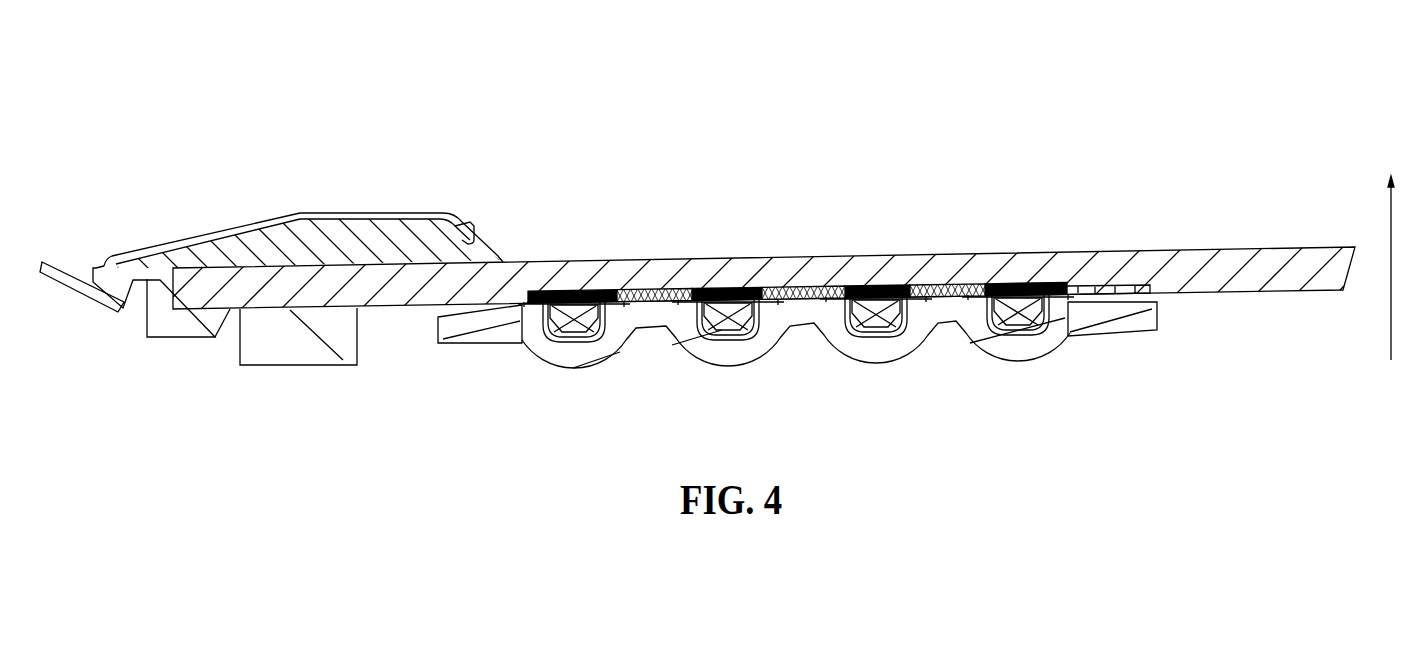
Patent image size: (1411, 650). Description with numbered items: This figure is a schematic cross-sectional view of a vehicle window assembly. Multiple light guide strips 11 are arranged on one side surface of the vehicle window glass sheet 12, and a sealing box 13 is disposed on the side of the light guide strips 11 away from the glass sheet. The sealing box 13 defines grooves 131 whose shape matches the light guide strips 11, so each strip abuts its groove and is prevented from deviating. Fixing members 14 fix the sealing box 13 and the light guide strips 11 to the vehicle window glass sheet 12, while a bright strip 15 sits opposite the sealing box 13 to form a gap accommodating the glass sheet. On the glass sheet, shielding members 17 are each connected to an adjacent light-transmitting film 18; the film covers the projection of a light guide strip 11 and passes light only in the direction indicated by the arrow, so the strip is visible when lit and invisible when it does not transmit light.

The light guide strip 11 is at (1020, 295).
The vehicle window glass sheet 12 is at (500, 248).
The sealing box 13 is at (937, 299).
The groove 131 is at (752, 289).
The fixing member 14 is at (1098, 247).
The bright strip 15 is at (318, 210).
The shielding member 17 is at (653, 287).
The light-transmitting film 18 is at (588, 290).